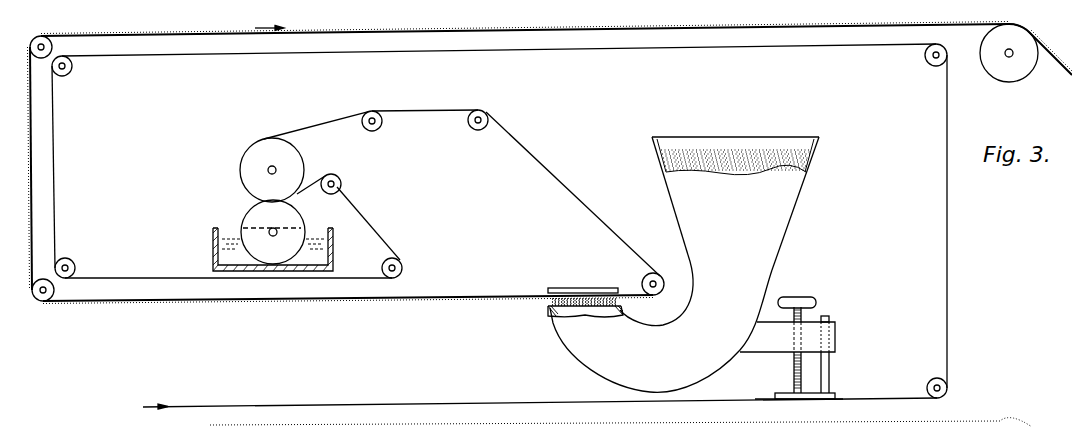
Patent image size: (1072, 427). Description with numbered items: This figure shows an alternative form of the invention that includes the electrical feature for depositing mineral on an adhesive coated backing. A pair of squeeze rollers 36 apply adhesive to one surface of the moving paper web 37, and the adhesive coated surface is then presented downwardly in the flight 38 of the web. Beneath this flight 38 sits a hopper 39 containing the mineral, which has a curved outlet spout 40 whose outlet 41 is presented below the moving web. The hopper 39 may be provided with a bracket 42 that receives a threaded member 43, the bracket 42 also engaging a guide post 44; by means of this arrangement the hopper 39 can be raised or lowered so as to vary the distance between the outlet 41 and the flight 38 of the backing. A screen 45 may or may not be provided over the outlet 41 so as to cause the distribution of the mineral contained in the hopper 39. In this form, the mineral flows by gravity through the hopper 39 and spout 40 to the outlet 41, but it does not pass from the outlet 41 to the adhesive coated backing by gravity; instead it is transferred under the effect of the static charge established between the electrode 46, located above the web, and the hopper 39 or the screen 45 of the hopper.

The squeeze rollers 36 is at (262, 218).
The paper web 37 is at (442, 110).
The flight 38 is at (435, 296).
The hopper 39 is at (785, 206).
The curved outlet spout 40 is at (720, 360).
The outlet 41 is at (553, 312).
The bracket 42 is at (835, 337).
The threaded member 43 is at (803, 370).
The guide post 44 is at (829, 317).
The screen 45 is at (622, 303).
The electrode 46 is at (569, 288).